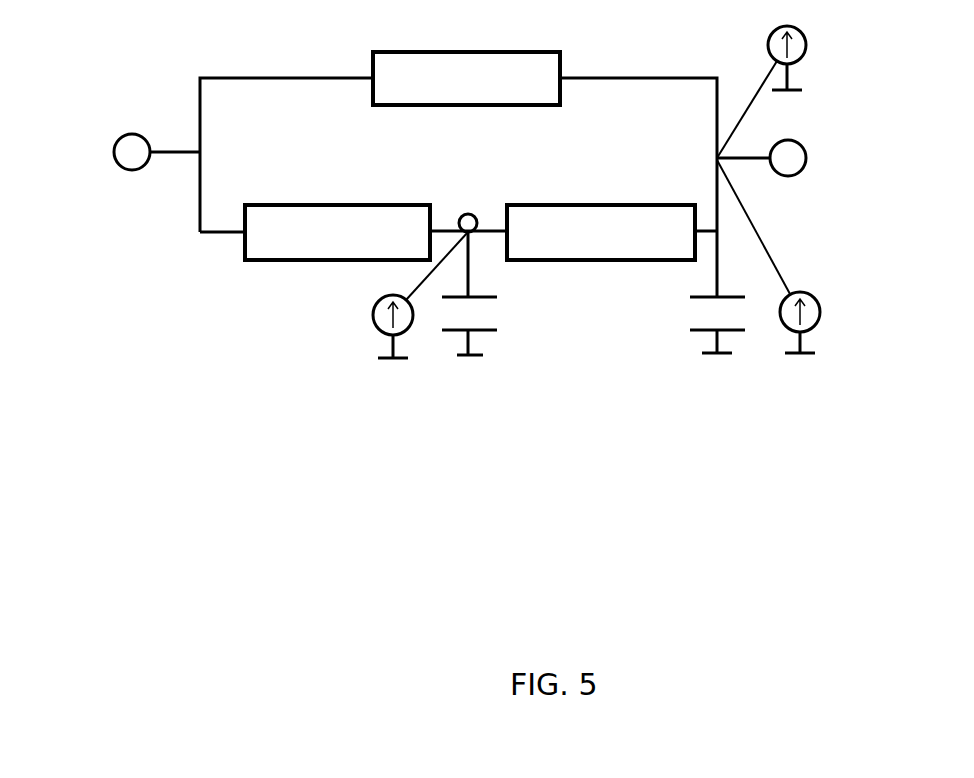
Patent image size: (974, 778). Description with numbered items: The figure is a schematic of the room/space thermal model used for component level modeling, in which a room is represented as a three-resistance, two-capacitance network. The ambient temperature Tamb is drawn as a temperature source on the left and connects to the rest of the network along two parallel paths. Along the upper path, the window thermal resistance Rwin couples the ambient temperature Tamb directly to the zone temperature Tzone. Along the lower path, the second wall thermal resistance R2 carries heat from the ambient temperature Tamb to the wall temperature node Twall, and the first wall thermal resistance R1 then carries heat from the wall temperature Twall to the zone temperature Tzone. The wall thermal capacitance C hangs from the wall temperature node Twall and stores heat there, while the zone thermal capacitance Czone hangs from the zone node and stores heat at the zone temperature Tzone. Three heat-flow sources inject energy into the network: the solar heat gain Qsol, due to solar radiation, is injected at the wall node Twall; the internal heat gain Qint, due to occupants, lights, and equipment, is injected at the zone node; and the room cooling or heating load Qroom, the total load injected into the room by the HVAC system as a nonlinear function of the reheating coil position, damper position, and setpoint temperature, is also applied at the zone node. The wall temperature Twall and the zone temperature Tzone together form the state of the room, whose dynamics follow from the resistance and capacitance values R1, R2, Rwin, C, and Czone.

The ambient temperature Tamb is at (142, 130).
The window thermal resistance Rwin is at (466, 80).
The first wall thermal resistance R1 is at (337, 233).
The second wall thermal resistance R2 is at (601, 233).
The wall temperature Twall is at (474, 195).
The wall thermal capacitance C is at (489, 293).
The zone thermal capacitance Czone is at (673, 325).
The zone temperature Tzone is at (811, 137).
The room cooling or heating load Qroom is at (839, 92).
The internal heat gain Qint is at (820, 256).
The solar heat gain Qsol is at (366, 295).